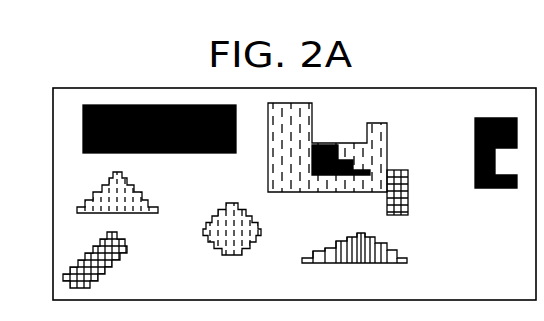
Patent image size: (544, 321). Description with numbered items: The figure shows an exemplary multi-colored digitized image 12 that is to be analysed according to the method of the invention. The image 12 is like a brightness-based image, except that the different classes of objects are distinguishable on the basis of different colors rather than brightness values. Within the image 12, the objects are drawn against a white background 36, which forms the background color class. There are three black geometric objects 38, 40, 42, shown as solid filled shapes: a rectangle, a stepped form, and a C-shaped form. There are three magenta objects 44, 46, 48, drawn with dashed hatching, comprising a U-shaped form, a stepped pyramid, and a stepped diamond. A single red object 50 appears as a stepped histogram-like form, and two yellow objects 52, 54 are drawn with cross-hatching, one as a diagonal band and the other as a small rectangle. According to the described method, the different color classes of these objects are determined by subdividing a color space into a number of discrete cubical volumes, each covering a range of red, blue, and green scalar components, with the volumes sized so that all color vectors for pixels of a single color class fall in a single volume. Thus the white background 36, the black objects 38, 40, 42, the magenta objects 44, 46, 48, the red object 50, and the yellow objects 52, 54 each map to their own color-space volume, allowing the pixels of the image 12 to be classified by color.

The image 12 is at (469, 88).
The white background 36 is at (278, 295).
The black geometric object 38 is at (200, 154).
The black geometric object 40 is at (314, 147).
The black geometric object 42 is at (474, 132).
The magenta object 44 is at (297, 193).
The magenta object 46 is at (144, 214).
The magenta object 48 is at (262, 233).
The red object 50 is at (357, 264).
The yellow object 52 is at (105, 268).
The yellow object 54 is at (409, 180).